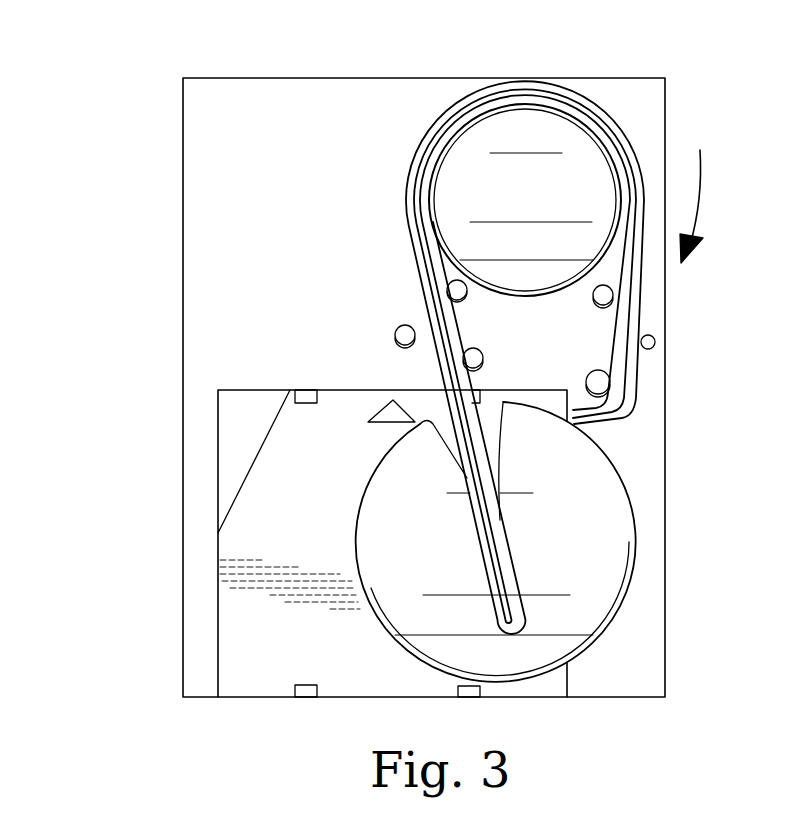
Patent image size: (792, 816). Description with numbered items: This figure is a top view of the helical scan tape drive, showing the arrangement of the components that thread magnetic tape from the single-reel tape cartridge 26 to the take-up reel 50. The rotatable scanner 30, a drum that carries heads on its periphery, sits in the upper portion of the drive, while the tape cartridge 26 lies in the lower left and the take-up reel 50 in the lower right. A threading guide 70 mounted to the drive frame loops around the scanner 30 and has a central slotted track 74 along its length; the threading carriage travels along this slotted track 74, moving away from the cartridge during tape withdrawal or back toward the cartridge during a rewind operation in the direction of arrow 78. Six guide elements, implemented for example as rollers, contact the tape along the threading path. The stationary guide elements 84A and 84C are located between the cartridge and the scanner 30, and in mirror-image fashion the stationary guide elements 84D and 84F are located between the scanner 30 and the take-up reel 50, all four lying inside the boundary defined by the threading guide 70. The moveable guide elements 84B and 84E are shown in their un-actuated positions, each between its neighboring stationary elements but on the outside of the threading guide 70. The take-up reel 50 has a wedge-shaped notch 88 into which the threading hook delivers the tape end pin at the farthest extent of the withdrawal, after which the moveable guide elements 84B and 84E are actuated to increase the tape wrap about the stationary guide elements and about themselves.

The single-reel tape cartridge 26 is at (233, 651).
The rotatable scanner 30 is at (570, 157).
The take-up reel 50 is at (607, 567).
The threading guide 70 is at (403, 207).
The slotted track 74 is at (442, 127).
The arrow 78 is at (705, 203).
The stationary guide element 84A is at (602, 382).
The moveable guide element 84B is at (657, 346).
The stationary guide element 84C is at (610, 298).
The stationary guide element 84D is at (455, 290).
The moveable guide element 84E is at (397, 338).
The stationary guide element 84F is at (470, 362).
The wedge-shaped notch 88 is at (495, 470).